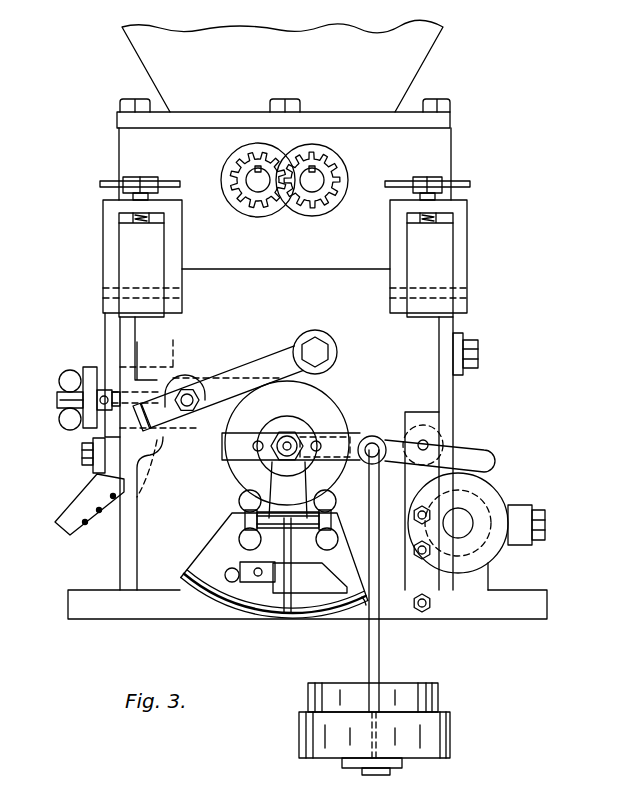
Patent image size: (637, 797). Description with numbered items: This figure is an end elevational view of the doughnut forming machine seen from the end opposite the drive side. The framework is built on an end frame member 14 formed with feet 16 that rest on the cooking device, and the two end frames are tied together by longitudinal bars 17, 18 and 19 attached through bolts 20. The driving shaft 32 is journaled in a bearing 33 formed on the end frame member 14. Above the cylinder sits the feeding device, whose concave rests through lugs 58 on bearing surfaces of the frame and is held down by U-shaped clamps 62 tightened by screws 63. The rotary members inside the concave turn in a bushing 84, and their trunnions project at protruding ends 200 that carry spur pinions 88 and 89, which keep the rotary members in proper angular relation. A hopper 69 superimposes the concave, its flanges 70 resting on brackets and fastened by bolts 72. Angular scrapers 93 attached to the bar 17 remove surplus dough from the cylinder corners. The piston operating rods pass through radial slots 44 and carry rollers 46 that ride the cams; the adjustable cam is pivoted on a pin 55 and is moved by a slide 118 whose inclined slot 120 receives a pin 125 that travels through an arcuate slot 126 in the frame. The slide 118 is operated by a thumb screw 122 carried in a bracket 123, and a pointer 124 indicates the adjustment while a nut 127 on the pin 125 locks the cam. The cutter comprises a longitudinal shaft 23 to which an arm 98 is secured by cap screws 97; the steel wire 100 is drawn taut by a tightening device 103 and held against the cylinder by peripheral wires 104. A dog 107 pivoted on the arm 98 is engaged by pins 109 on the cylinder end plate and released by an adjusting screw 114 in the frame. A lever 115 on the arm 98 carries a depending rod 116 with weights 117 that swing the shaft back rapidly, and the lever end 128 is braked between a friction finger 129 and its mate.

The hopper 69 is at (415, 60).
The flanges 70 is at (452, 120).
The bolts 72 is at (447, 108).
The bushing 84 is at (313, 145).
The spur pinion 88 is at (245, 200).
The spur pinion 89 is at (308, 205).
The protruding ends 200 is at (258, 180).
The screws 63 is at (125, 180).
The U-shaped clamps 62 is at (105, 218).
The lugs 58 is at (135, 245).
The slides 118 is at (110, 373).
The arcuate slots 126 is at (173, 347).
The brackets 123 is at (95, 367).
The thumb screws 122 is at (67, 380).
The longitudinal bar 17 is at (95, 440).
The bolts 20 is at (90, 465).
The scrapers 93 is at (62, 524).
The end frame member 14 is at (130, 540).
The inclined slots 120 is at (135, 483).
The feet 16 is at (112, 605).
The pointer 124 is at (230, 345).
The pin 55 is at (316, 340).
The nuts 127 is at (177, 380).
The pins 125 is at (187, 412).
The longitudinal shaft 23 is at (289, 441).
The cap screws 97 is at (282, 432).
The lever 115 is at (338, 445).
The lever end 128 is at (470, 455).
The finger 129 is at (432, 420).
The longitudinal bar 18 is at (465, 340).
The bearings 33 is at (492, 558).
The driving shaft 32 is at (462, 520).
The longitudinal bar 19 is at (535, 510).
The depending rod 116 is at (381, 650).
The rollers 46 is at (362, 597).
The adjusting screw 114 is at (437, 588).
The weights 117 is at (450, 720).
The arm 98 is at (280, 482).
The steel wire 100 is at (298, 597).
The tightening device 103 is at (240, 540).
The radial slots 44 is at (240, 535).
The peripheral wires 104 is at (207, 593).
The pins 109 is at (225, 580).
The dog 107 is at (260, 582).